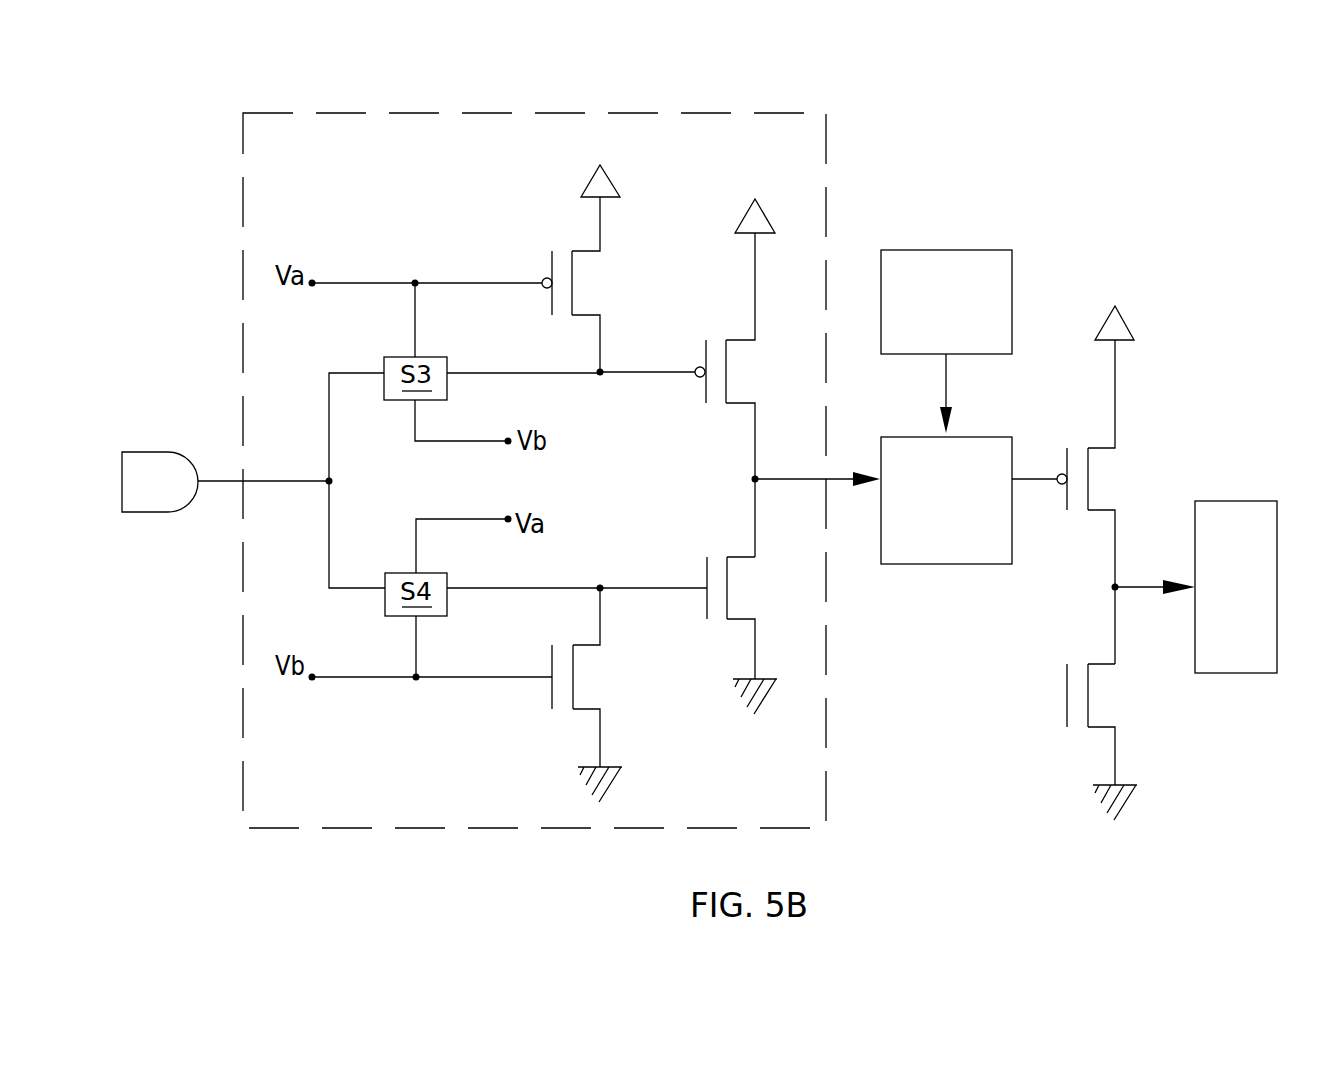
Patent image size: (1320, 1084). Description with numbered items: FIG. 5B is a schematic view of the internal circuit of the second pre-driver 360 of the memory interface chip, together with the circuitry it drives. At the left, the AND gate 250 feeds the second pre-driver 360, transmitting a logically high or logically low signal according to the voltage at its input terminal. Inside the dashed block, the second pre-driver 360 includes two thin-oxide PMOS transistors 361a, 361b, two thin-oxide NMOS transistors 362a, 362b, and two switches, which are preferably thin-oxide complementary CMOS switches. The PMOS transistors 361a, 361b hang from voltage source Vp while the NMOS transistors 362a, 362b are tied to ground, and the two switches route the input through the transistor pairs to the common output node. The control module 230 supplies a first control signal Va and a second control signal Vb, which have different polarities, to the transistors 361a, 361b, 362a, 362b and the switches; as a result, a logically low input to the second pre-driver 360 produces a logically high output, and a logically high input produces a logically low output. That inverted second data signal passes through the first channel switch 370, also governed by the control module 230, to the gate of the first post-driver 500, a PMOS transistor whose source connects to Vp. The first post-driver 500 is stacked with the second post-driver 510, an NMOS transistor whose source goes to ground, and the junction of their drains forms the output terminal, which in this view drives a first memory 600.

The AND gate 250 is at (225, 463).
The second pre-driver 360 is at (653, 113).
The thin-oxide PMOS transistor 361a is at (597, 250).
The thin-oxide PMOS transistor 361b is at (703, 360).
The thin-oxide NMOS transistor 362a is at (603, 695).
The thin-oxide NMOS transistor 362b is at (703, 635).
The control module 230 is at (927, 343).
The first channel switch 370 is at (966, 558).
The first post-driver 500 is at (1082, 468).
The second post-driver 510 is at (1110, 742).
The first memory 600 is at (1218, 627).